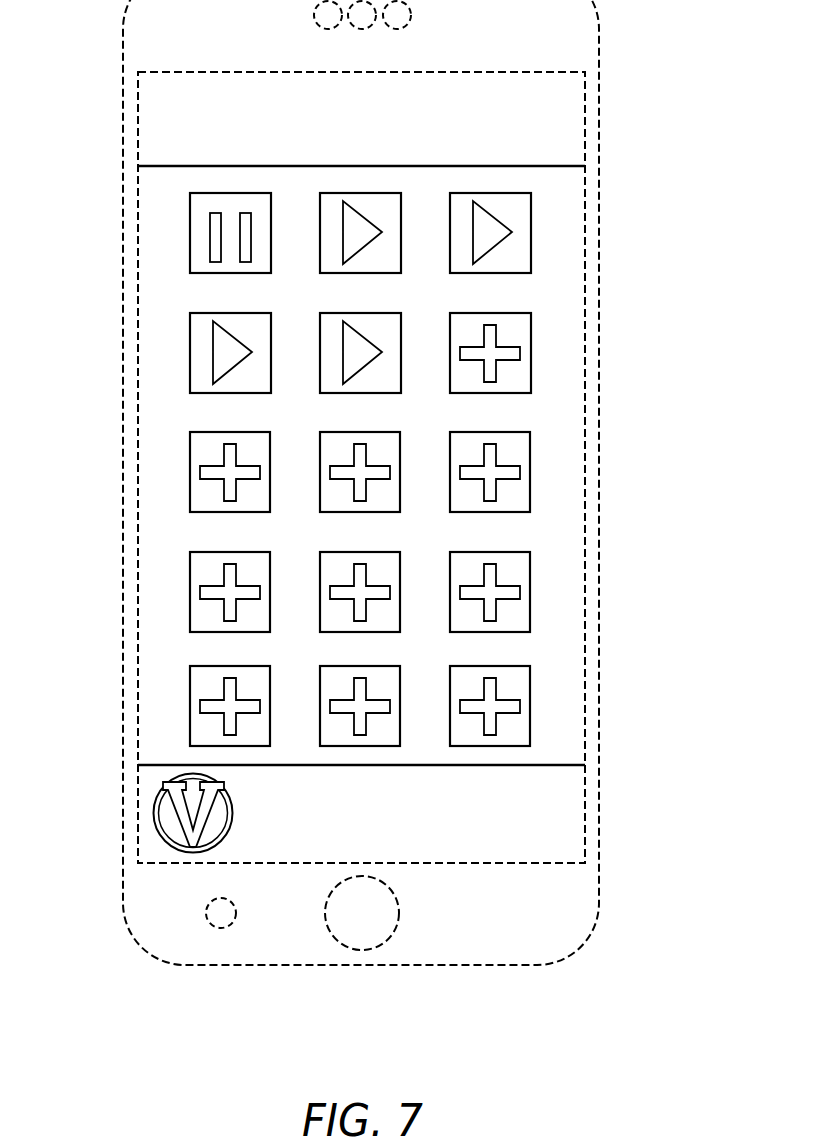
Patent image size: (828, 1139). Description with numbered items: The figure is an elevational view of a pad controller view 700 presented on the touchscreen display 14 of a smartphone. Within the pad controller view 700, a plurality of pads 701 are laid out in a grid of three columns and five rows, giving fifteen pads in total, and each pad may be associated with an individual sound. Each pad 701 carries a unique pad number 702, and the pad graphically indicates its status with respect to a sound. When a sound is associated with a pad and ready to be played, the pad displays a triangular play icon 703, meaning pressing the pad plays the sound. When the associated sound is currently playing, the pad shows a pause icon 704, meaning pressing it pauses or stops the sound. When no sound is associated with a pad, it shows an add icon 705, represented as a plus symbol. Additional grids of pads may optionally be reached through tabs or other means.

The pad controller view 700 is at (585, 597).
The touchscreen display 14 is at (585, 217).
The pads 701 is at (402, 258).
The pad number 702 is at (394, 194).
The triangular play icon 703 is at (212, 352).
The pause icon 704 is at (212, 242).
The add icon 705 is at (508, 358).